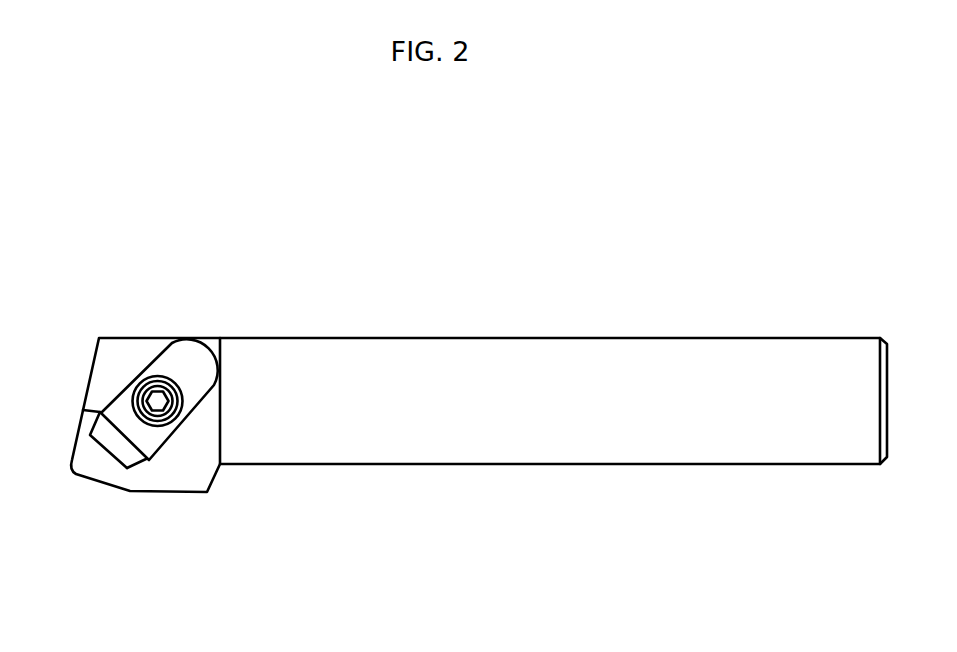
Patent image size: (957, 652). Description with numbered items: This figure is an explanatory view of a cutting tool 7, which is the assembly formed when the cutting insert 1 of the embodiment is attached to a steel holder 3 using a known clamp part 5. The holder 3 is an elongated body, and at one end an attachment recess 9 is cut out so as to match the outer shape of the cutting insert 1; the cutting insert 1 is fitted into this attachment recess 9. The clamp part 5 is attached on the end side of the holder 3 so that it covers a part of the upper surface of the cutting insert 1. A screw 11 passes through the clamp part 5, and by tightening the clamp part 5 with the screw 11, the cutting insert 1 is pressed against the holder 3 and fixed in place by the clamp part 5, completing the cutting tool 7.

The cutting tool 7 is at (423, 270).
The holder 3 is at (535, 348).
The cutting insert 1 is at (93, 468).
The clamp part 5 is at (179, 350).
The attachment recess 9 is at (133, 475).
The screw 11 is at (157, 399).